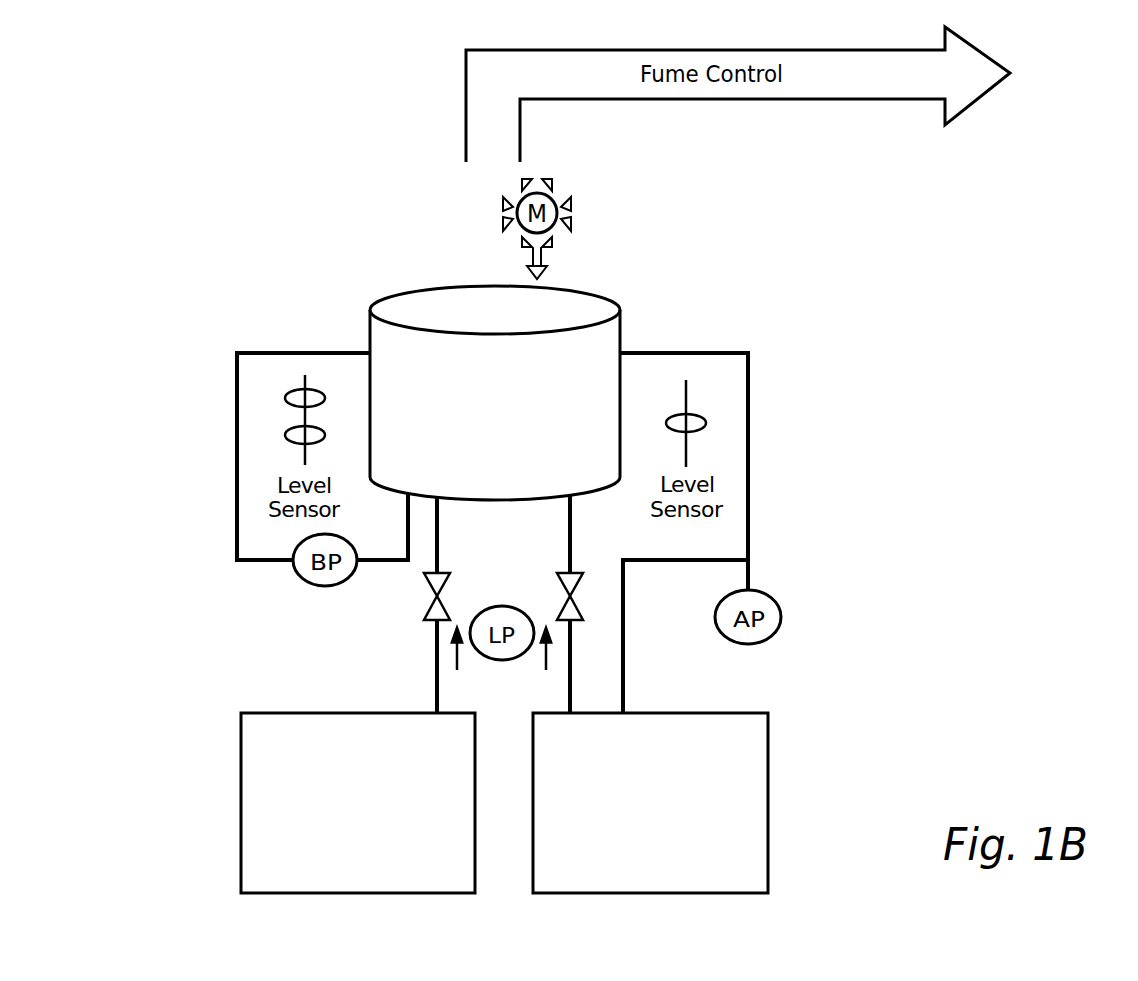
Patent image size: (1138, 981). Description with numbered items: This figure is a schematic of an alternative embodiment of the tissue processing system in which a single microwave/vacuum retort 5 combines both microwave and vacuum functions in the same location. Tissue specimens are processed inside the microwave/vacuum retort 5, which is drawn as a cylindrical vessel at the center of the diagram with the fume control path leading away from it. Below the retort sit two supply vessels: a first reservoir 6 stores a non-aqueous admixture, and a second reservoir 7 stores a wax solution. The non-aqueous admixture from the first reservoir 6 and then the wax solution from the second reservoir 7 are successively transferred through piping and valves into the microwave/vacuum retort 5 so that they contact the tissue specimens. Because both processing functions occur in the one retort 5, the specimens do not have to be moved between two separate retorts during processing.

The microwave/vacuum retort 5 is at (396, 263).
The first reservoir 6 is at (210, 794).
The second reservoir 7 is at (808, 803).